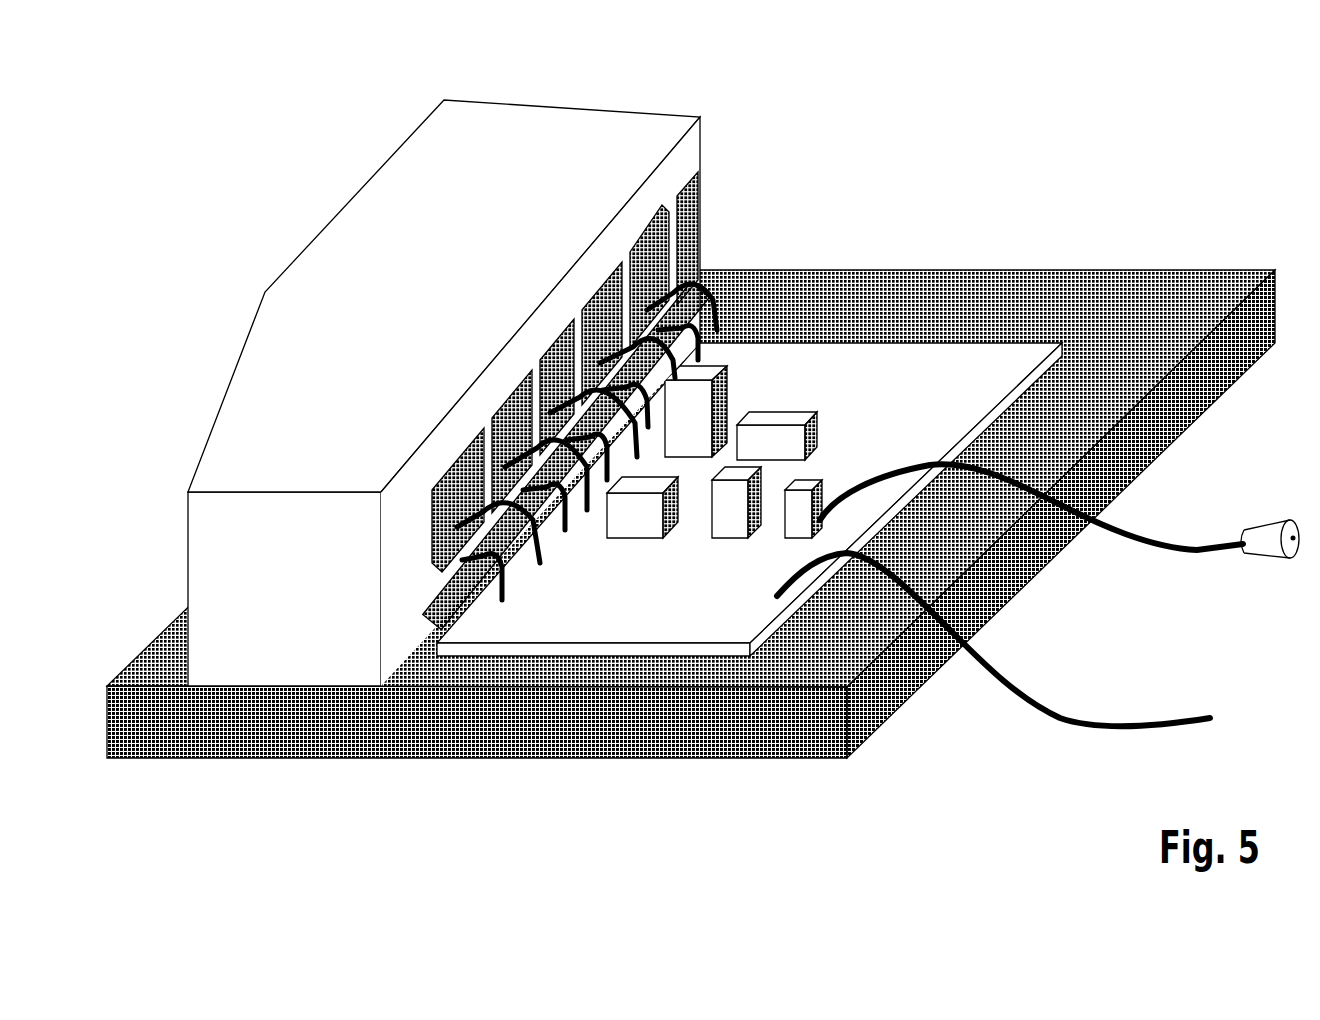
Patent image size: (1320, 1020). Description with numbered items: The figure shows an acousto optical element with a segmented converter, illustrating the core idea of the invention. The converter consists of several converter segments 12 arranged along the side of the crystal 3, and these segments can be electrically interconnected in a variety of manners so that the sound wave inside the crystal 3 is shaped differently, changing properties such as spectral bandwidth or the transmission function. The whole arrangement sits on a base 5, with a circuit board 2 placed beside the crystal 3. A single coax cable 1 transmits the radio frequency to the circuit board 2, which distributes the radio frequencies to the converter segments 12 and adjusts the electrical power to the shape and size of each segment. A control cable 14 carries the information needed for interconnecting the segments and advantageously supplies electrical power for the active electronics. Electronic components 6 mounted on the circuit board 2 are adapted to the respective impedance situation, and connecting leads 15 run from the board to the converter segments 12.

The coax cable 1 is at (1117, 537).
The circuit board 2 is at (523, 637).
The crystal 3 is at (608, 148).
The base plate 5 is at (945, 315).
The electronic components 6 is at (815, 431).
The converter segments 12 is at (660, 268).
The control cable 14 is at (1033, 707).
The coil wire 15 is at (718, 290).